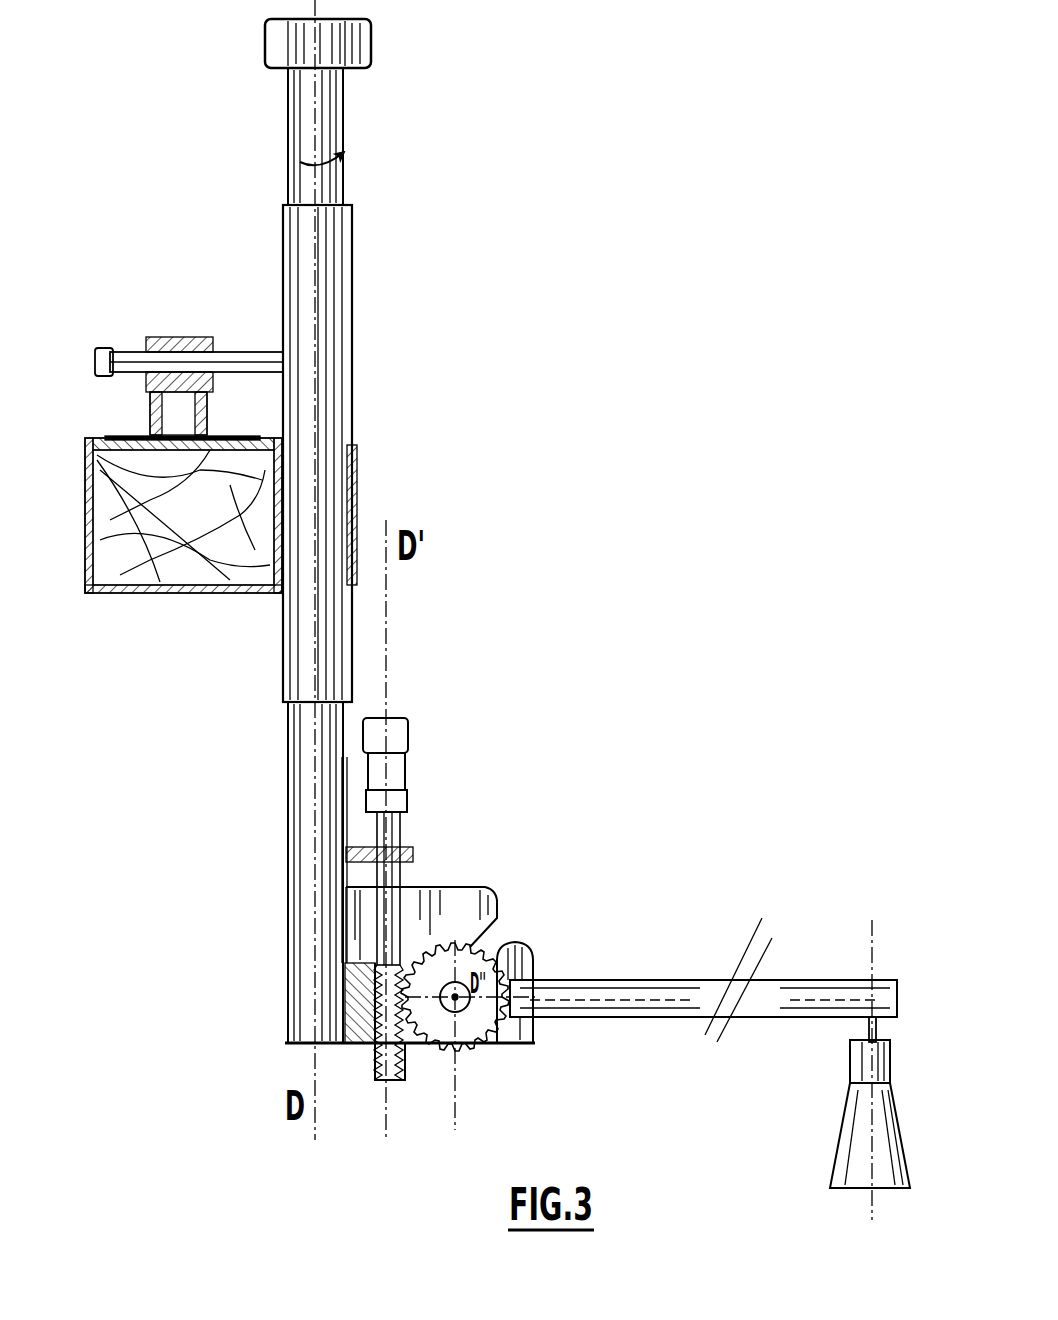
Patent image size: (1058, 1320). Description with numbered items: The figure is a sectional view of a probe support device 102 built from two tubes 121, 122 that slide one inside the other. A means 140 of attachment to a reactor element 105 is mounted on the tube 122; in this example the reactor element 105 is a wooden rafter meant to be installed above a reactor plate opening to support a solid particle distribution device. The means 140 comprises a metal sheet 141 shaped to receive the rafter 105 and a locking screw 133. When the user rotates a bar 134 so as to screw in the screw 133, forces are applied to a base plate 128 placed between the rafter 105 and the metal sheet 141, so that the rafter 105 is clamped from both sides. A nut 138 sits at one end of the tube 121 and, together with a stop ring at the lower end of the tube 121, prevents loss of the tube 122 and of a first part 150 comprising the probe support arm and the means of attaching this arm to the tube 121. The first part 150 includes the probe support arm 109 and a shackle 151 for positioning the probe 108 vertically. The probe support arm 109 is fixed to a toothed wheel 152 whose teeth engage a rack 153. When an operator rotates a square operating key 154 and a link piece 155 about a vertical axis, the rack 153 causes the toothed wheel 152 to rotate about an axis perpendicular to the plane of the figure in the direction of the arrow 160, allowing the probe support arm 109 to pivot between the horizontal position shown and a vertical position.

The probe support device 102 is at (657, 520).
The reactor element 105 is at (222, 590).
The probe 108 is at (855, 1120).
The probe support arm 109 is at (755, 932).
The tube 121 is at (345, 105).
The tube 122 is at (335, 407).
The base plate 128 is at (158, 529).
The locking screw 133 is at (190, 337).
The bar 134 is at (248, 352).
The nut 138 is at (274, 49).
The means of attachment 140 is at (130, 322).
The metal sheet 141 is at (92, 593).
The first part 150 is at (512, 693).
The shackle 151 is at (866, 1025).
The toothed wheel 152 is at (476, 1040).
The rack 153 is at (395, 1080).
The square operating key 154 is at (405, 734).
The link piece 155 is at (405, 778).
The arrow 160 is at (478, 850).